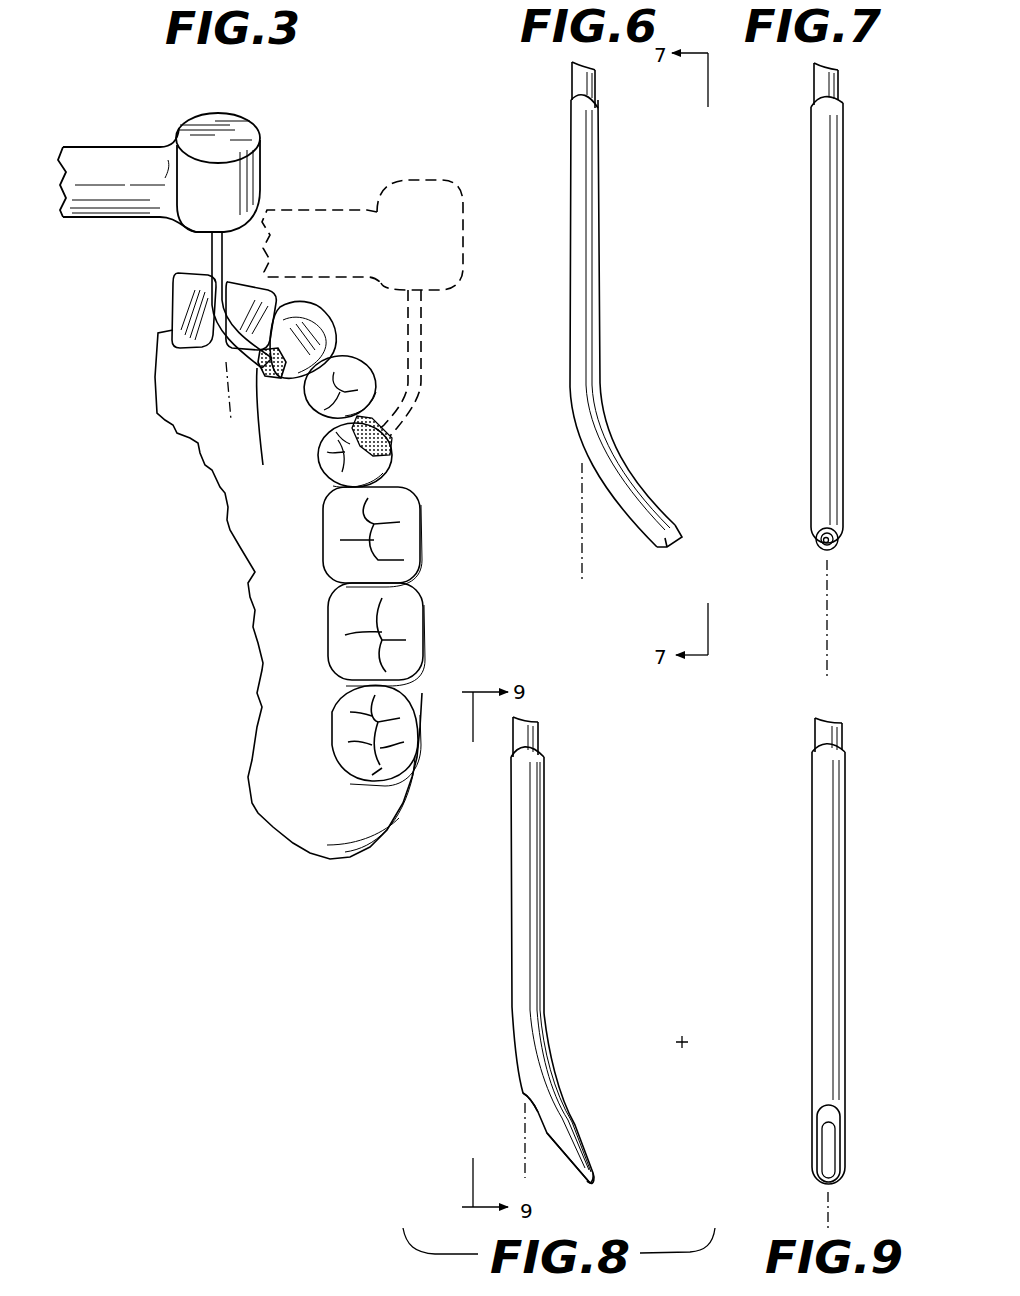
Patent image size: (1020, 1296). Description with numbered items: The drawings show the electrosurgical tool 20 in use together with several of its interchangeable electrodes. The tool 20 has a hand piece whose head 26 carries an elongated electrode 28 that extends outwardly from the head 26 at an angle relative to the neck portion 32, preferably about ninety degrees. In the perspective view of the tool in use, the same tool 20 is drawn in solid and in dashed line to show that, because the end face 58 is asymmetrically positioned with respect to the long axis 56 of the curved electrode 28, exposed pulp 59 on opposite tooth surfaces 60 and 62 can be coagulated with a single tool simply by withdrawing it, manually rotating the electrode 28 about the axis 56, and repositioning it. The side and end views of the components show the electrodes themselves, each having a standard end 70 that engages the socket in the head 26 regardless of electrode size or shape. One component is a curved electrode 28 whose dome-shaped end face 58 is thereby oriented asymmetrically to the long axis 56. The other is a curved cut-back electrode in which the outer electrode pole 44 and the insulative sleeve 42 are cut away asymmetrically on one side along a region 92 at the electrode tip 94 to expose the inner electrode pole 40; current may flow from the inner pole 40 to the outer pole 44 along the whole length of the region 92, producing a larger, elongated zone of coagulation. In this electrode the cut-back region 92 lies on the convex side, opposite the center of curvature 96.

In FIG. 3, the electrosurgical tool 20 is at (97, 133).
In FIG. 3, the head 26 is at (228, 122).
In FIG. 3, the electrode 28 is at (207, 260).
In FIG. 6, the electrode 28 is at (596, 190).
In FIG. 7, the electrode 28 is at (822, 303).
In FIG. 8, the electrode 28 is at (530, 826).
In FIG. 9, the electrode 28 is at (837, 828).
In FIG. 3, the neck portion 32 is at (86, 218).
In FIG. 9, the inner electrode pole 40 is at (830, 1148).
In FIG. 9, the insulative sleeve 42 is at (837, 1122).
In FIG. 8, the outer electrode pole 44 is at (523, 1090).
In FIG. 9, the outer electrode pole 44 is at (830, 1110).
In FIG. 3, the long axis 56 is at (222, 378).
In FIG. 6, the long axis 56 is at (583, 570).
In FIG. 7, the long axis 56 is at (828, 604).
In FIG. 8, the long axis 56 is at (525, 1152).
In FIG. 9, the long axis 56 is at (833, 1212).
In FIG. 3, the end face 58 is at (258, 428).
In FIG. 6, the end face 58 is at (665, 548).
In FIG. 7, the end face 58 is at (840, 546).
In FIG. 8, the end face 58 is at (565, 1157).
In FIG. 9, the end face 58 is at (845, 1143).
In FIG. 3, the exposed pulp 59 is at (263, 465).
In FIG. 3, the tooth surface 60 is at (298, 332).
In FIG. 3, the tooth surface 62 is at (398, 470).
In FIG. 6, the standard end 70 is at (567, 85).
In FIG. 7, the standard end 70 is at (845, 83).
In FIG. 8, the standard end 70 is at (540, 735).
In FIG. 9, the standard end 70 is at (843, 737).
In FIG. 8, the cut-back region 92 is at (543, 1123).
In FIG. 8, the electrode tip 94 is at (597, 1183).
In FIG. 9, the electrode tip 94 is at (823, 1183).
In FIG. 8, the center of curvature 96 is at (677, 1040).